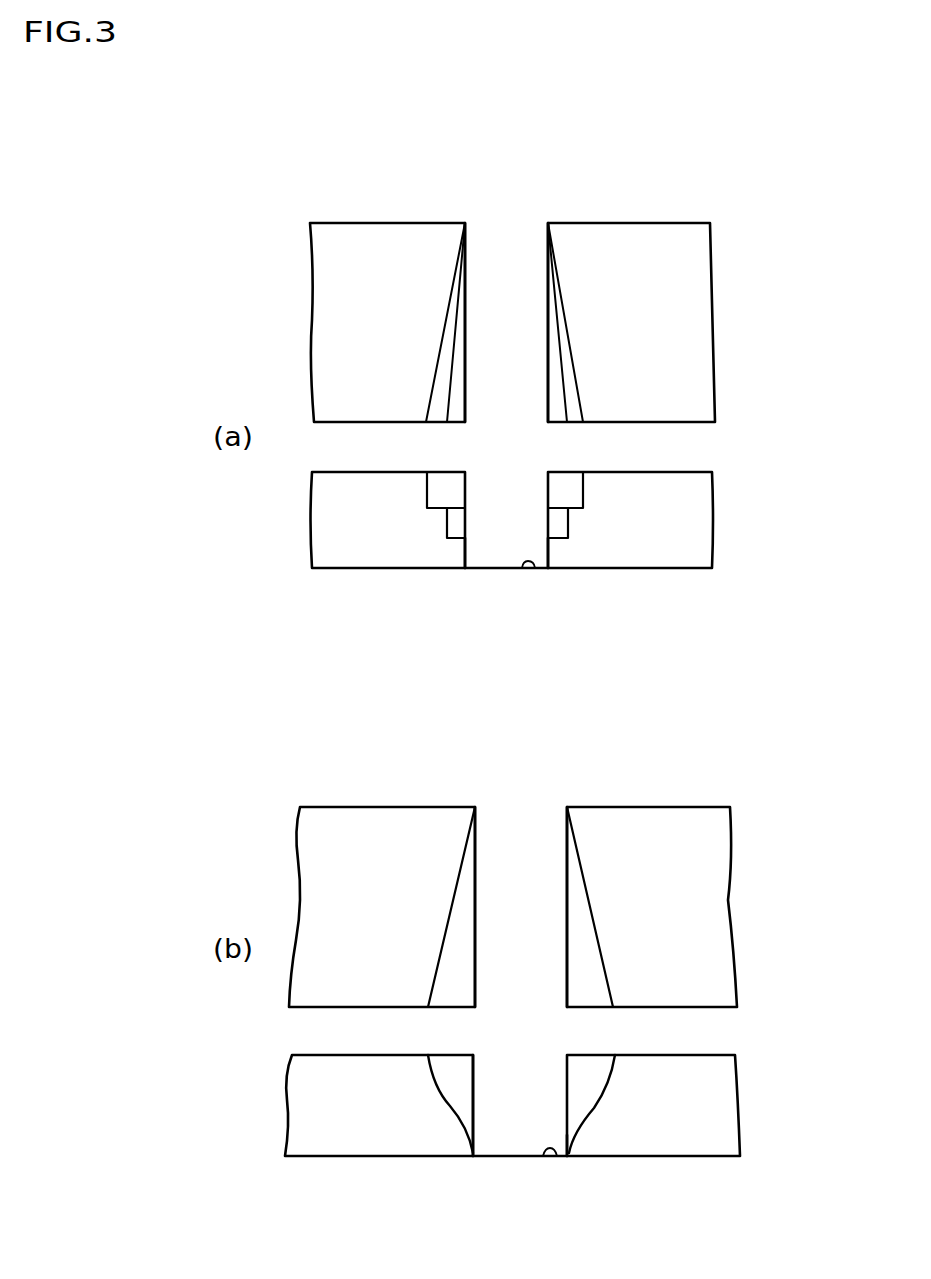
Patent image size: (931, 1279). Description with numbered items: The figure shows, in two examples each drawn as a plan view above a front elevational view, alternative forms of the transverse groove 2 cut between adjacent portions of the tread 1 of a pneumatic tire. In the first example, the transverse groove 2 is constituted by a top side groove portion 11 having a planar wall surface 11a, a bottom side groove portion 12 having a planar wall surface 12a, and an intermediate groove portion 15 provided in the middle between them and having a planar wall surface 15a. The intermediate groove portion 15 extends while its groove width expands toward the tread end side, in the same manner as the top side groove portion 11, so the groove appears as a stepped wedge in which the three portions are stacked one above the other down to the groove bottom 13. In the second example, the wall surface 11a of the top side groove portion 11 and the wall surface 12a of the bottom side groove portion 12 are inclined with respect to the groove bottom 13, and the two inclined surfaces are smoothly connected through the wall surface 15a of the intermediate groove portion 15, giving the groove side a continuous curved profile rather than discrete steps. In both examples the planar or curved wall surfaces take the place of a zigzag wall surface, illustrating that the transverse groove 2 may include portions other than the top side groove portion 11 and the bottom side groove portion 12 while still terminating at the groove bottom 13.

The substrate 1 is at (405, 232).
The transverse groove 2 is at (515, 226).
The wall surface of the top side groove portion 11a is at (563, 312).
The wall surface of the intermediate groove portion 15a is at (563, 375).
The wall surface of the bottom side groove portion 12a is at (548, 406).
The top side groove portion 11 is at (587, 506).
The intermediate groove portion 15 is at (571, 510).
The bottom side groove portion 12 is at (557, 541).
The groove bottom 13 is at (533, 568).